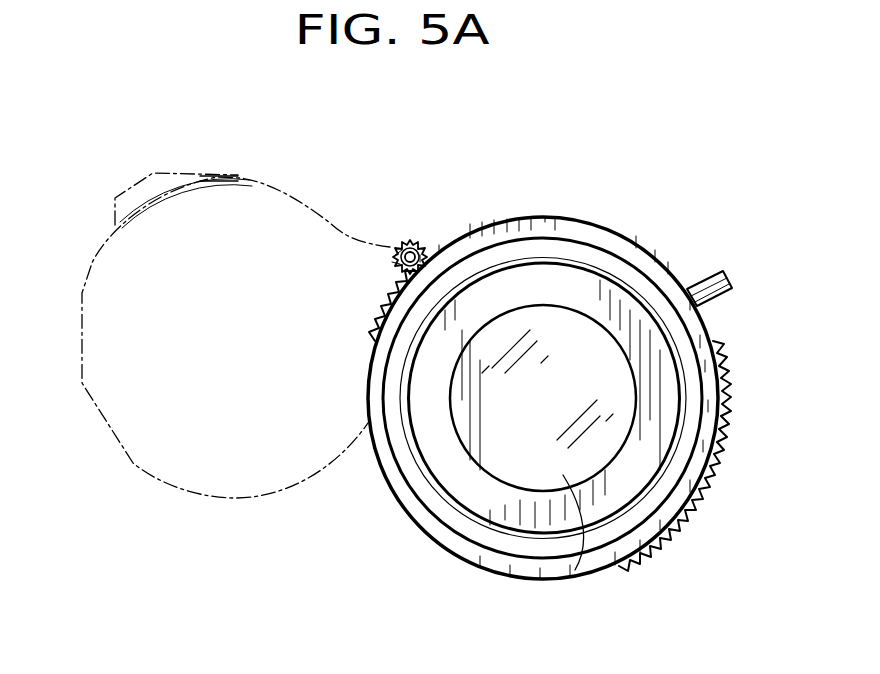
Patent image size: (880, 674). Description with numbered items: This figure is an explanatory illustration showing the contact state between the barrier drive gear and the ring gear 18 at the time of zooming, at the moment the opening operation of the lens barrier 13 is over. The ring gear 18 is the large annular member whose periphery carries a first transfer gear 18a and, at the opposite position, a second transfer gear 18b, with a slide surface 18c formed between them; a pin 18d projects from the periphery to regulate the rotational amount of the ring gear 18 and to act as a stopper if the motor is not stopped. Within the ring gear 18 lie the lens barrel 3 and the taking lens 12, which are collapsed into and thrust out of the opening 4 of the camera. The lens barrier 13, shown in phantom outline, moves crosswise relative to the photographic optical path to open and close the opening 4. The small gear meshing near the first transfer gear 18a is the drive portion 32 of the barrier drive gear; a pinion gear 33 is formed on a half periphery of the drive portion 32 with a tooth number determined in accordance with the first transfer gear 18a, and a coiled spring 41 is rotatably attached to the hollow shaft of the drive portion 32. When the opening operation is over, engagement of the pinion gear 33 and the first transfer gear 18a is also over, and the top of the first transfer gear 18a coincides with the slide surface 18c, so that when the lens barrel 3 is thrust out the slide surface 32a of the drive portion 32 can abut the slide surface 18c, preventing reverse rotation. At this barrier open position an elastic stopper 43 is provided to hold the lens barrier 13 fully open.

The lens barrel 3 is at (472, 500).
The opening 4 is at (603, 265).
The taking lens 12 is at (575, 570).
The lens barrier 13 is at (133, 462).
The ring gear 18 is at (532, 220).
The first transfer gear 18a is at (383, 327).
The second transfer gear 18b is at (682, 528).
The slide surface 18c is at (580, 224).
The pin 18d is at (713, 269).
The drive portion 32 is at (398, 240).
The slide surface 32a is at (421, 247).
The pinion gear 33 is at (390, 263).
The coiled spring 41 is at (414, 238).
The stopper 43 is at (178, 172).